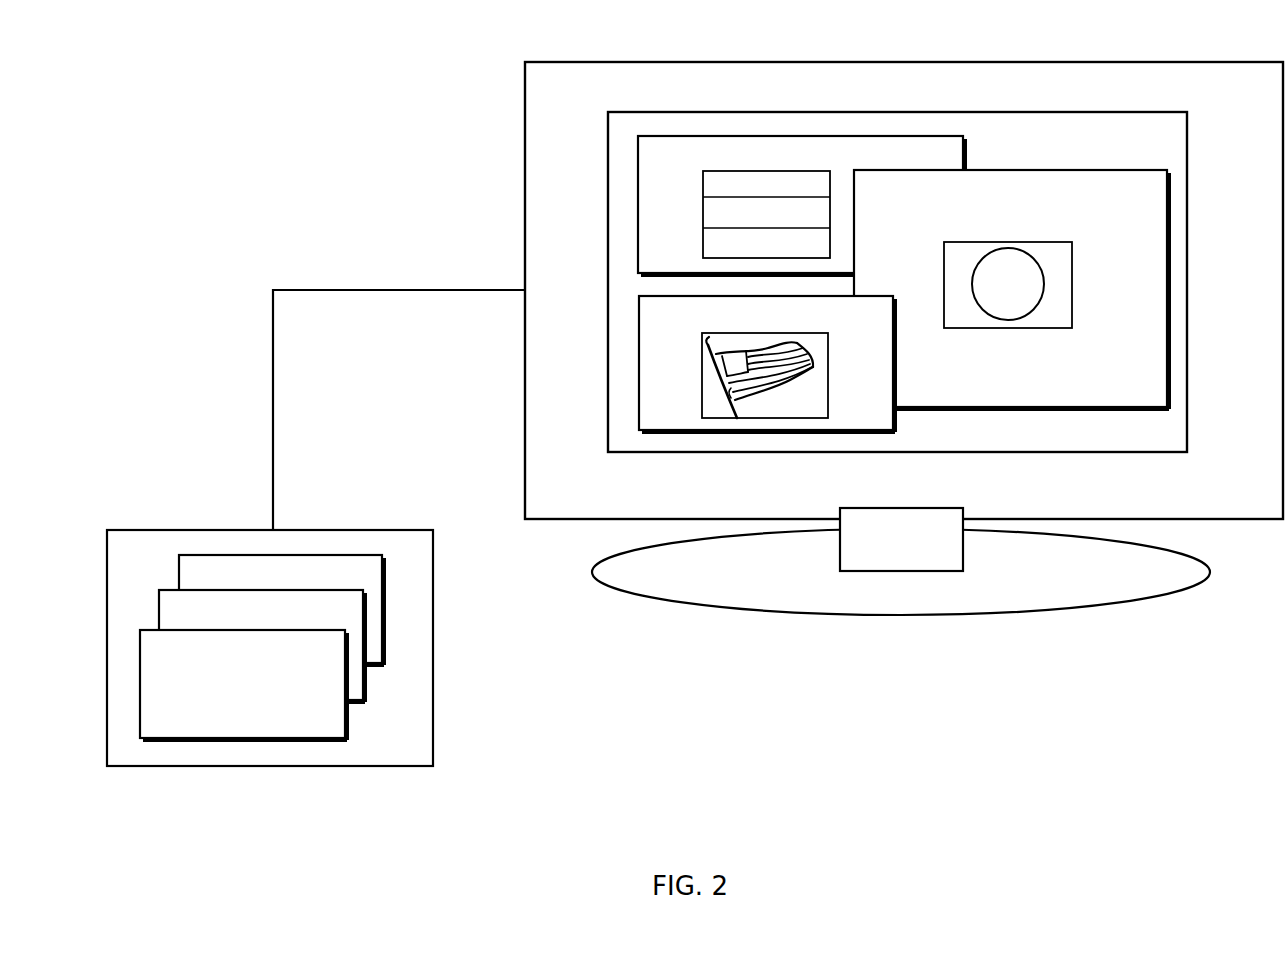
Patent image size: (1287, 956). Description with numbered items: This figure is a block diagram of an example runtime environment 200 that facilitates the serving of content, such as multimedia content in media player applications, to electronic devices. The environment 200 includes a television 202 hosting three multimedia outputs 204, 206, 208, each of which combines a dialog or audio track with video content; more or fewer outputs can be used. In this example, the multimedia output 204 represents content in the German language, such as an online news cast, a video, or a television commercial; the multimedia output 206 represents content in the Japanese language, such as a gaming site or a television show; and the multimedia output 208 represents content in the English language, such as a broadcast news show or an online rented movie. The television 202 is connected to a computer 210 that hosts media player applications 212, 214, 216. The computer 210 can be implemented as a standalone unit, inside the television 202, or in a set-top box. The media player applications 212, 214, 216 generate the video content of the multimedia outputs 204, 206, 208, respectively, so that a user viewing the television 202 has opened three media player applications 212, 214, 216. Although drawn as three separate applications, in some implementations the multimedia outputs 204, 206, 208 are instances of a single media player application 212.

The runtime environment 200 is at (141, 96).
The television 202 is at (902, 62).
The multimedia output 204 is at (691, 268).
The multimedia output 206 is at (1155, 398).
The multimedia output 208 is at (687, 421).
The computer 210 is at (426, 756).
The media player application 212 is at (329, 658).
The media player application 214 is at (347, 620).
The media player application 216 is at (375, 583).